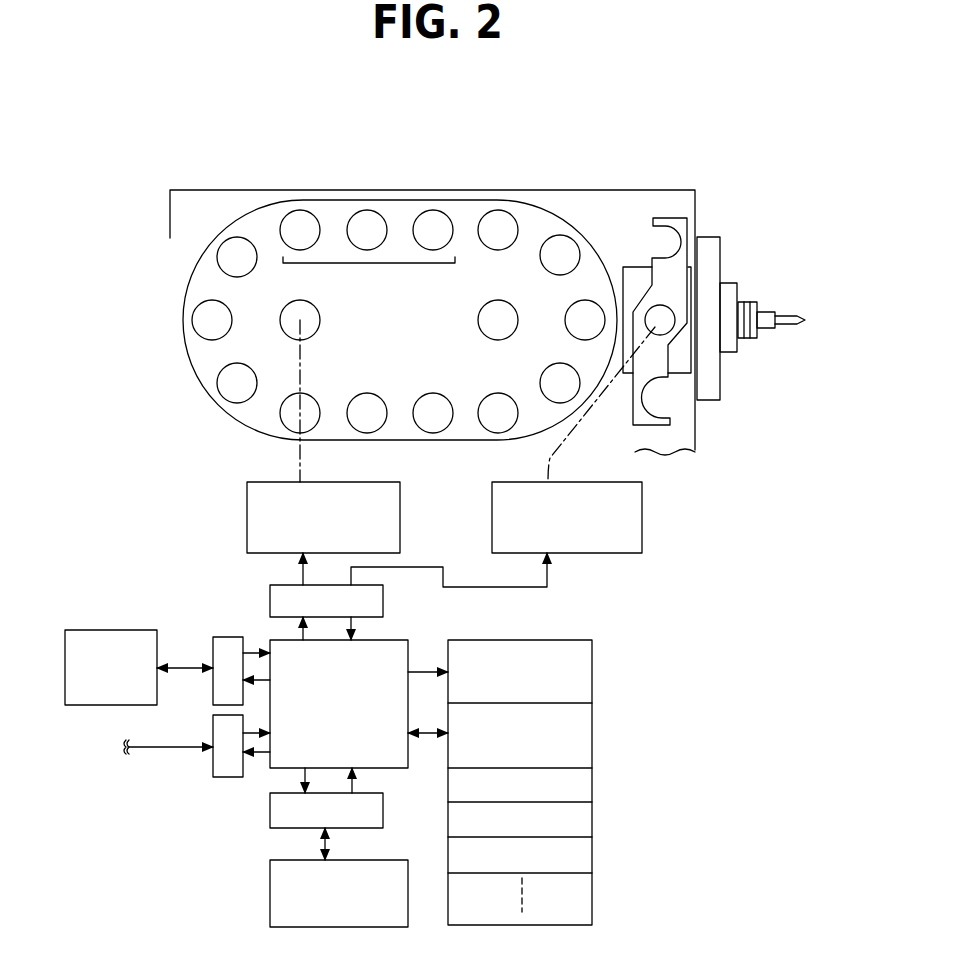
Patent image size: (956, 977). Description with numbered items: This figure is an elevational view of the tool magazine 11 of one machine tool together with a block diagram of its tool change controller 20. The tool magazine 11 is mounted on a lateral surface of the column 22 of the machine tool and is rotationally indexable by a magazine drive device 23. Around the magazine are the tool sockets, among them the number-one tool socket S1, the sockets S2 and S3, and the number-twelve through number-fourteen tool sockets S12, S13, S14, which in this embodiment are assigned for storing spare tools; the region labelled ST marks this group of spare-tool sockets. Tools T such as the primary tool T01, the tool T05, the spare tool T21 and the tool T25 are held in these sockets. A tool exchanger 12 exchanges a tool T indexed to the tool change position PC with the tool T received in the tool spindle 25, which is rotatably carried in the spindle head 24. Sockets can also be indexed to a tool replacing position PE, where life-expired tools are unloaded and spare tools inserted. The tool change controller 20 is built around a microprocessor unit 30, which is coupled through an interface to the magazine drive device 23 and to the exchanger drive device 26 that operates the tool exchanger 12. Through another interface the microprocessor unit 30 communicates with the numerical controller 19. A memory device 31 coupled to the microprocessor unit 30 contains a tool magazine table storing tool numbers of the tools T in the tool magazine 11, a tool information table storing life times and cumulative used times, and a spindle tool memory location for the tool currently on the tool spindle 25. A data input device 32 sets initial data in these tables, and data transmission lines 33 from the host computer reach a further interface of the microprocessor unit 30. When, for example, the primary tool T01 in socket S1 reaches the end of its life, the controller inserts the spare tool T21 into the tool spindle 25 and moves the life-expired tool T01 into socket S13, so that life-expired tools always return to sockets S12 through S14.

The tool magazine 11 is at (190, 362).
The tool exchanger 12 is at (682, 390).
The numerical controller 19 is at (118, 630).
The tool change controller 20 is at (223, 607).
The column 22 is at (170, 221).
The magazine drive device 23 is at (400, 515).
The spindle head 24 is at (710, 257).
The tool spindle 25 is at (727, 295).
The exchanger drive device 26 is at (642, 515).
The microprocessor unit 30 is at (392, 643).
The memory device 31 is at (585, 673).
The data input device 32 is at (270, 872).
The data transmission lines 33 is at (160, 750).
The tool replacing position PE is at (213, 404).
The tool change position PC is at (617, 307).
The tool storage section ST is at (369, 279).
The No-1 tool socket S1 is at (498, 222).
The socket/pocket S2 is at (565, 250).
The socket/pocket S3 is at (578, 329).
The No-12 tool socket S12 is at (287, 231).
The No-13 tool socket S13 is at (363, 222).
The No-14 tool socket S14 is at (432, 222).
The tool T is at (765, 327).
The primary tool T01 is at (510, 231).
The tool T05 is at (577, 319).
The spare tool T21 is at (353, 239).
The tool T25 is at (413, 235).